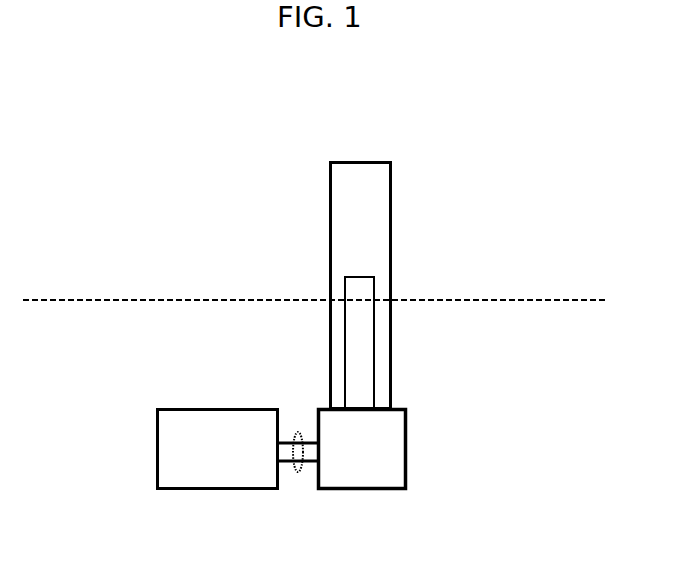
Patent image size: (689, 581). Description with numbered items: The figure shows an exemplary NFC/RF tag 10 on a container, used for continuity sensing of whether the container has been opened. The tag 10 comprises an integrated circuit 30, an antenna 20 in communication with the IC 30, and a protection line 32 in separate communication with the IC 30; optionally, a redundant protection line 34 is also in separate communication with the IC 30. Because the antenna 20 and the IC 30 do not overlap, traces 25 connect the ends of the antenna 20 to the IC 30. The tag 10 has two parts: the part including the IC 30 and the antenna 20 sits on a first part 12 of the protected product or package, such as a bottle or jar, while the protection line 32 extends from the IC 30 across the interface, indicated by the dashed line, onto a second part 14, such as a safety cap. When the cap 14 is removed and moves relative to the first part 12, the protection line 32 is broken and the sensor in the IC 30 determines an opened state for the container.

The NFC device 10 is at (238, 120).
The first part 12 is at (558, 372).
The second part 14 is at (196, 216).
The antenna 20 is at (156, 425).
The traces 25 is at (298, 432).
The integrated circuit 30 is at (407, 467).
The protection line 32 is at (330, 197).
The redundant protection line 34 is at (375, 324).